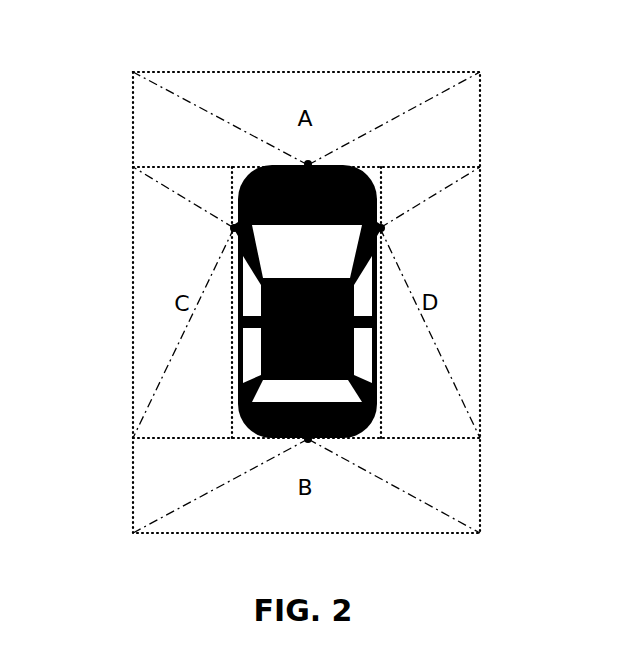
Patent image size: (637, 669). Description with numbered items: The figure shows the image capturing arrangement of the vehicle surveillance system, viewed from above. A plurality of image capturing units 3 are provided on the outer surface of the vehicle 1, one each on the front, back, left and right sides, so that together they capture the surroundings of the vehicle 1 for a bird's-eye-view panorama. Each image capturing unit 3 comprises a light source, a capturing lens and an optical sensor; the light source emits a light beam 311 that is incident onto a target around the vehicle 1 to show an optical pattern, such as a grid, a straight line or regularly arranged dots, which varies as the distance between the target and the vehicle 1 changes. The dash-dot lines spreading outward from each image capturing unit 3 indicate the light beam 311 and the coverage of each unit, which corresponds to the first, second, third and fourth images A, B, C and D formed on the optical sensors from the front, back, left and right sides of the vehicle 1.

The vehicle 1 is at (355, 333).
The image capturing unit 3 is at (308, 163).
The light beam 311 is at (418, 107).